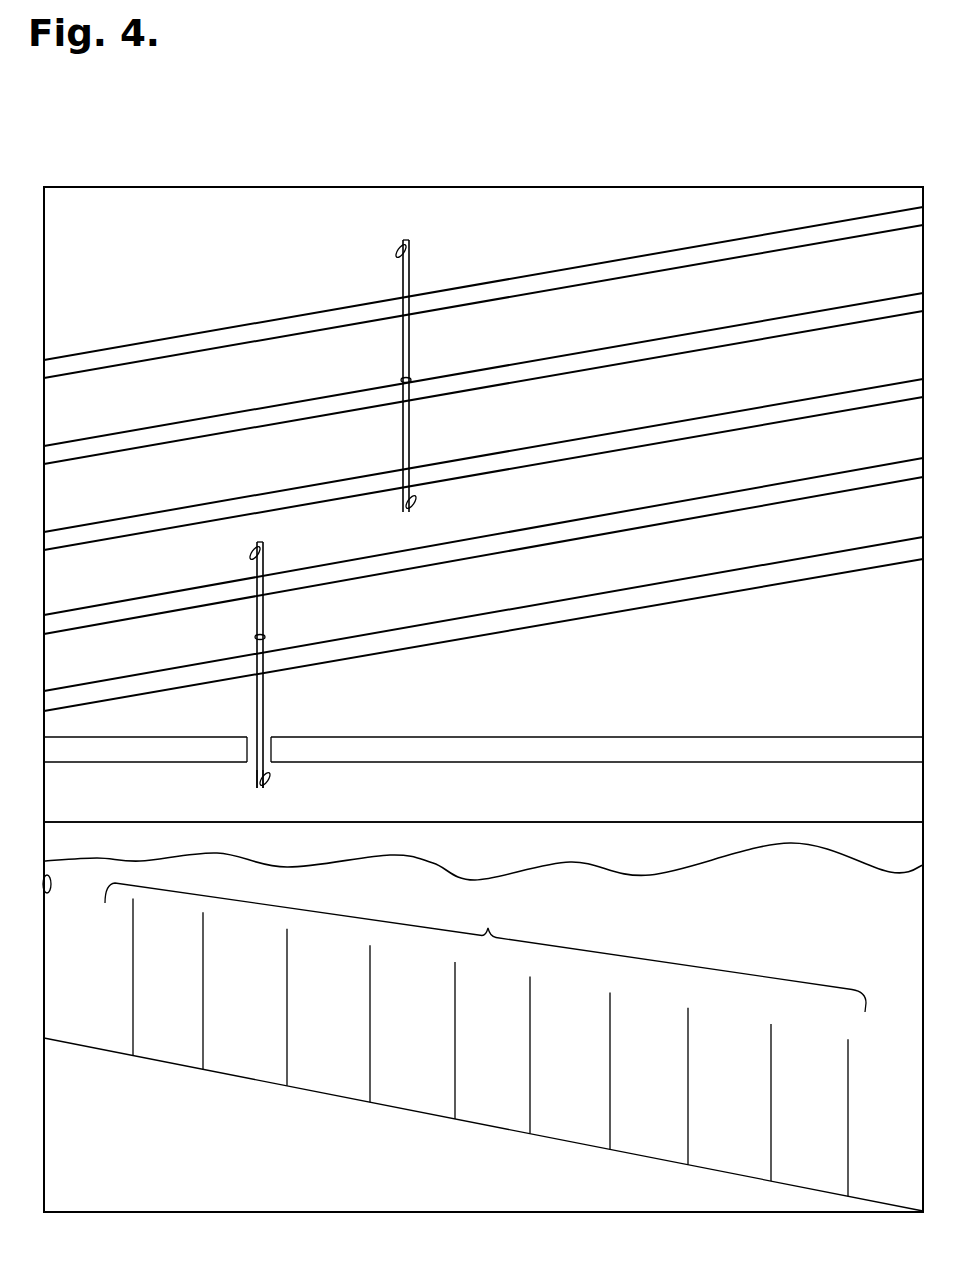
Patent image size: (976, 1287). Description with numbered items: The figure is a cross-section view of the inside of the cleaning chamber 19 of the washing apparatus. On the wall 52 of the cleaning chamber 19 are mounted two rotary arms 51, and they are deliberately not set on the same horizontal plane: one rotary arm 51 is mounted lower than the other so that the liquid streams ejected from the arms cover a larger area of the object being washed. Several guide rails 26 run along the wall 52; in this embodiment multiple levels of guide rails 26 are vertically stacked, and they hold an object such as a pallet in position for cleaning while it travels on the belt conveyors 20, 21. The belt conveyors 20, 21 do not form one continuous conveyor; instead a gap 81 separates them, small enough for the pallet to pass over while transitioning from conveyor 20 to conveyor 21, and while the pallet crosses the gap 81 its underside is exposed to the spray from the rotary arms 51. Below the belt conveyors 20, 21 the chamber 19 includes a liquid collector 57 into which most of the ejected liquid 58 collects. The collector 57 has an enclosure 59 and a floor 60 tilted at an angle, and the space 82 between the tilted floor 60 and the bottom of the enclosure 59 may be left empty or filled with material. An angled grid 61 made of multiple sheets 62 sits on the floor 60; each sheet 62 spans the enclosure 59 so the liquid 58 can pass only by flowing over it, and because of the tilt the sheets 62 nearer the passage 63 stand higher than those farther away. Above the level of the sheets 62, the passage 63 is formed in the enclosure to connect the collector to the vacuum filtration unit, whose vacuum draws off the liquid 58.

The cleaning chamber 19 is at (113, 97).
The wall 52 is at (140, 238).
The guide rail 26 is at (482, 283).
The rotary arm 51 is at (401, 226).
The belt conveyor 20 is at (206, 737).
The belt conveyor 21 is at (610, 737).
The gap 81 is at (273, 789).
The enclosure 59 is at (112, 822).
The liquid 58 is at (478, 880).
The passage 63 is at (50, 890).
The angled grid 61 is at (485, 947).
The sheet 62 is at (133, 942).
The floor 60 is at (85, 1046).
The liquid collector 57 is at (40, 1207).
The space 82 is at (252, 1167).